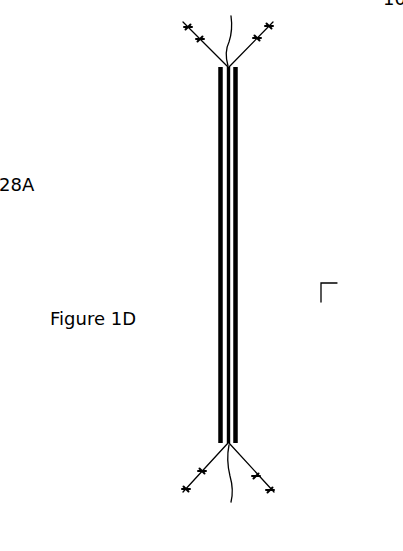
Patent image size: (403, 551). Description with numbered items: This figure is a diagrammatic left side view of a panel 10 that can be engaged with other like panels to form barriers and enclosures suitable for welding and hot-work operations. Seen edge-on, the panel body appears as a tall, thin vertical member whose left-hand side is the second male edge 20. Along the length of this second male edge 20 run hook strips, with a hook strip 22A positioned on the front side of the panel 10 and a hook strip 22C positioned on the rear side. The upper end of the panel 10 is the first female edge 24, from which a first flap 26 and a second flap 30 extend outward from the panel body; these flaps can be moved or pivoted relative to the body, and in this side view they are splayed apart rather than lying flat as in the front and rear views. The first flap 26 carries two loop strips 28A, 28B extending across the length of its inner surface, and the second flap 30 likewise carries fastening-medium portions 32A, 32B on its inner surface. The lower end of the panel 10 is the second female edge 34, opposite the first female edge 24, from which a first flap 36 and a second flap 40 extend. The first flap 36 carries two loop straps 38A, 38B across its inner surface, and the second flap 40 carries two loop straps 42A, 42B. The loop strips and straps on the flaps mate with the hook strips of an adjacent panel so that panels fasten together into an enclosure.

The panel 10 is at (323, 286).
The second male edge 20 is at (228, 125).
The hook strip 22A is at (222, 220).
The hook strip 22C is at (234, 263).
The first female edge 24 is at (228, 33).
The first flap 26 is at (213, 54).
The loop strip 28A is at (186, 27).
The loop strip 28B is at (184, 54).
The second flap 30 is at (246, 52).
The outer upper right connector 32A is at (270, 26).
The inner upper right connector 32B is at (274, 52).
The second female edge 34 is at (227, 480).
The first flap 36 is at (213, 458).
The loop strap 38A is at (185, 489).
The loop strap 38B is at (185, 460).
The second flap 40 is at (245, 458).
The loop strap 42A is at (271, 489).
The loop strap 42B is at (272, 462).